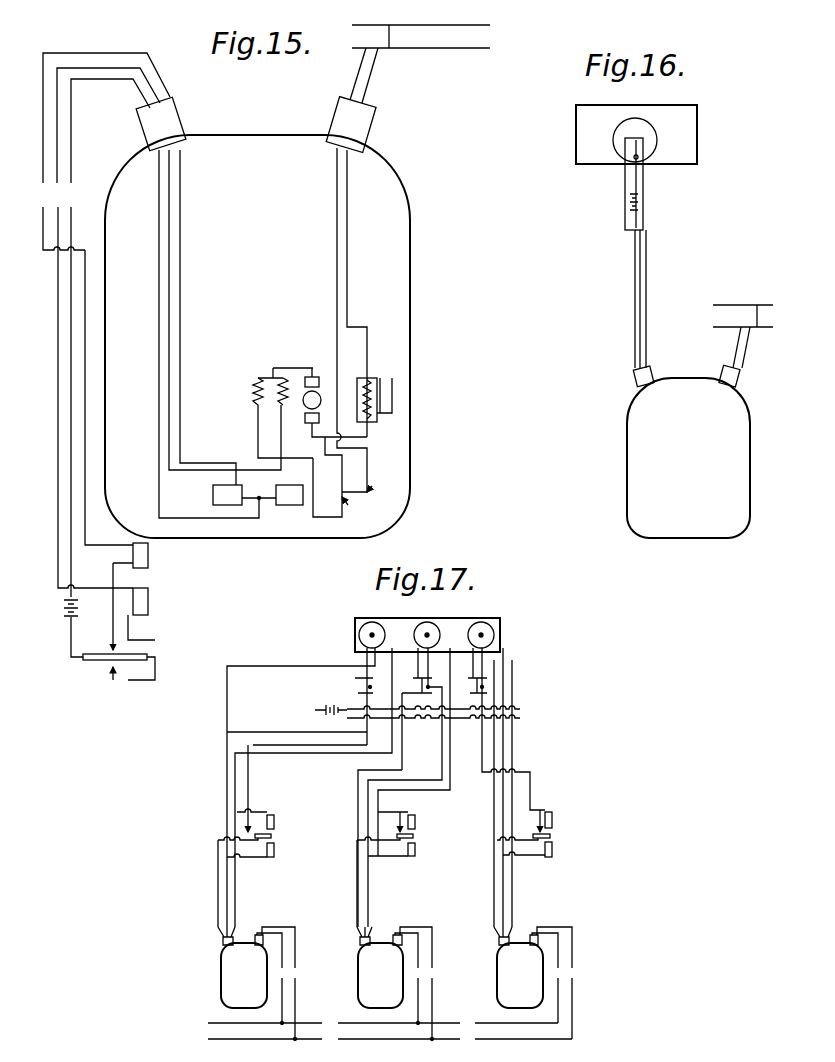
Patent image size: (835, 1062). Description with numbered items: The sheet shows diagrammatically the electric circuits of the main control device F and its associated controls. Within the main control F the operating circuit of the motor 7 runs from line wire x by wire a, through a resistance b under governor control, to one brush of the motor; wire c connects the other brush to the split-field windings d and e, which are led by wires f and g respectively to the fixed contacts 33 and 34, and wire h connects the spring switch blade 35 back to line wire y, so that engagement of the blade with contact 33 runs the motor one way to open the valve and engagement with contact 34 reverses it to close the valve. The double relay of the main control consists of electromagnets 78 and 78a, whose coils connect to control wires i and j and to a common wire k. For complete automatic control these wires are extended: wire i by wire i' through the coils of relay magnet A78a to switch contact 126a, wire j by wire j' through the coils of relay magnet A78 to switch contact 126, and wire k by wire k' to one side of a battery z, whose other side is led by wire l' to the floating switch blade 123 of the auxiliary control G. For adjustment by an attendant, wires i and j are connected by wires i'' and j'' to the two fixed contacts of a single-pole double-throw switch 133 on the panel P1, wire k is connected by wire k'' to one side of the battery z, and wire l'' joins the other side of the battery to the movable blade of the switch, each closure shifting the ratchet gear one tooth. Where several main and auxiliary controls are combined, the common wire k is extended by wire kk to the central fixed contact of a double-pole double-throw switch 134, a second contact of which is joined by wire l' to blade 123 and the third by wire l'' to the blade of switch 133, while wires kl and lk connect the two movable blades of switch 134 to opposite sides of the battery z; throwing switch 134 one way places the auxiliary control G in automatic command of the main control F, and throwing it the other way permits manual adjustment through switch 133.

In FIG. 15, the main control device F is at (257, 336).
In FIG. 16, the main control device F is at (688, 458).
In FIG. 17, the main control device F is at (382, 975).
In FIG. 15, the line wire x is at (429, 25).
In FIG. 16, the line wire x is at (734, 303).
In FIG. 17, the line wire x is at (372, 1019).
In FIG. 15, the line wire y is at (429, 40).
In FIG. 16, the line wire y is at (734, 320).
In FIG. 17, the line wire y is at (379, 1037).
In FIG. 15, the wire h is at (352, 62).
In FIG. 16, the wire h is at (726, 360).
In FIG. 17, the wire h is at (285, 940).
In FIG. 15, the wire a is at (378, 68).
In FIG. 16, the wire a is at (748, 362).
In FIG. 17, the wire a is at (297, 960).
In FIG. 15, the control circuit wire j is at (139, 256).
In FIG. 16, the control circuit wire j is at (658, 309).
In FIG. 15, the control circuit wire i is at (169, 249).
In FIG. 16, the control circuit wire i is at (663, 299).
In FIG. 15, the common wire k is at (165, 298).
In FIG. 16, the common wire k is at (617, 305).
In FIG. 15, the wire c is at (293, 368).
In FIG. 15, the split-field winding e is at (255, 397).
In FIG. 15, the split-field winding d is at (278, 391).
In FIG. 15, the motor 7 is at (316, 398).
In FIG. 15, the resistance b is at (370, 405).
In FIG. 15, the wire f is at (327, 477).
In FIG. 15, the wire g is at (303, 482).
In FIG. 15, the electromagnet 78a is at (213, 490).
In FIG. 15, the electromagnet 78 is at (287, 505).
In FIG. 15, the fixed contact 33 is at (372, 489).
In FIG. 15, the fixed contact 34 is at (348, 505).
In FIG. 15, the spring switch blade 35 is at (372, 498).
In FIG. 15, the wire i' is at (111, 443).
In FIG. 17, the wire i' is at (393, 879).
In FIG. 15, the wire k' is at (49, 402).
In FIG. 15, the wire j' is at (109, 441).
In FIG. 17, the wire j' is at (406, 788).
In FIG. 15, the battery z is at (60, 607).
In FIG. 16, the battery z is at (626, 216).
In FIG. 17, the battery z is at (330, 702).
In FIG. 15, the wire l' is at (61, 637).
In FIG. 17, the wire l' is at (431, 787).
In FIG. 15, the relay magnet A78 is at (148, 556).
In FIG. 17, the relay magnet A78 is at (274, 822).
In FIG. 15, the relay magnet A78a is at (148, 598).
In FIG. 17, the relay magnet A78a is at (274, 855).
In FIG. 15, the auxiliary control G is at (175, 623).
In FIG. 17, the auxiliary control G is at (387, 868).
In FIG. 15, the floating switch blade 123 is at (90, 660).
In FIG. 17, the floating switch blade 123 is at (258, 840).
In FIG. 15, the switch contact 126 is at (110, 664).
In FIG. 17, the switch contact 126 is at (271, 836).
In FIG. 15, the switch contact 126a is at (116, 680).
In FIG. 17, the switch contact 126a is at (262, 845).
In FIG. 16, the panel P1 is at (692, 117).
In FIG. 17, the panel P1 is at (500, 642).
In FIG. 16, the single-pole double-throw switch 133 is at (636, 137).
In FIG. 17, the single-pole double-throw switch 133 is at (370, 628).
In FIG. 17, the double-pole double-throw switch 134 is at (354, 680).
In FIG. 16, the wire l'' is at (663, 184).
In FIG. 17, the wire l'' is at (388, 787).
In FIG. 16, the wire i'' is at (659, 200).
In FIG. 17, the wire i'' is at (395, 784).
In FIG. 16, the wire j'' is at (641, 273).
In FIG. 17, the wire j'' is at (408, 778).
In FIG. 16, the wire k'' is at (621, 299).
In FIG. 17, the wire kk is at (272, 734).
In FIG. 17, the wire kl is at (348, 722).
In FIG. 17, the wire lk is at (328, 790).